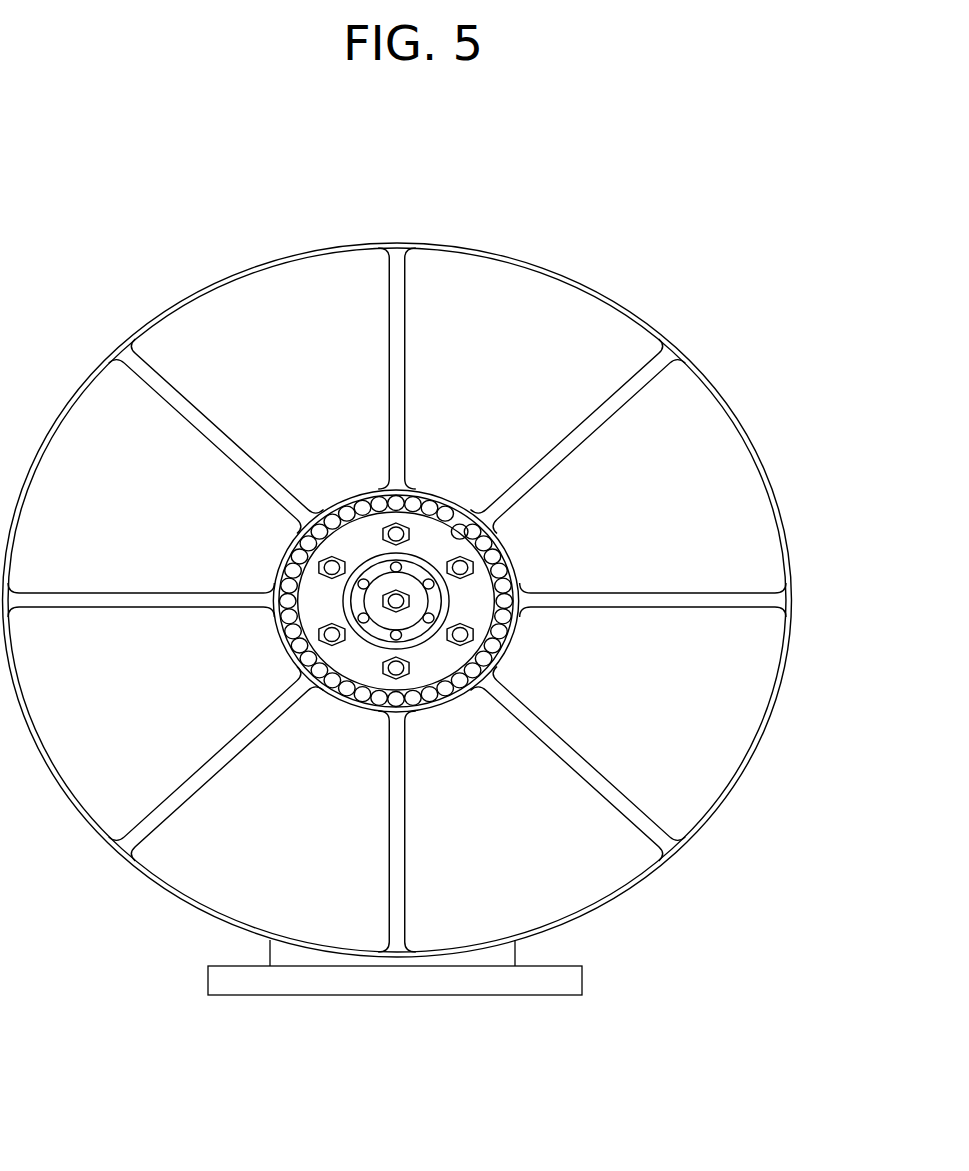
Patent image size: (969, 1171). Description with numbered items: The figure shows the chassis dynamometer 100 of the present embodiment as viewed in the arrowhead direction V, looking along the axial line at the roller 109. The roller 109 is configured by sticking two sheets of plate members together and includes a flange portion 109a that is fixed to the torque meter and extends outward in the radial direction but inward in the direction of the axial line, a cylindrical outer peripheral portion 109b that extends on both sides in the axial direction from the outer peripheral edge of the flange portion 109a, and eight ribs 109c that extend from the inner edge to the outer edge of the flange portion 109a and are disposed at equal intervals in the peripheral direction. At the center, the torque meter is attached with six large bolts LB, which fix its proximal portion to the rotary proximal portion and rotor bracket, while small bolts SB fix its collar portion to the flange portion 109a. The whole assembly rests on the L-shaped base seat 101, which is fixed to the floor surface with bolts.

The chassis dynamometer 100 is at (167, 281).
The roller 109 is at (600, 292).
The flange portion 109a is at (698, 450).
The cylindrical outer peripheral portion 109b is at (475, 262).
The ribs 109c is at (223, 440).
The small bolt SB is at (358, 500).
The large bolts LB is at (457, 562).
The base seat 101 is at (583, 978).